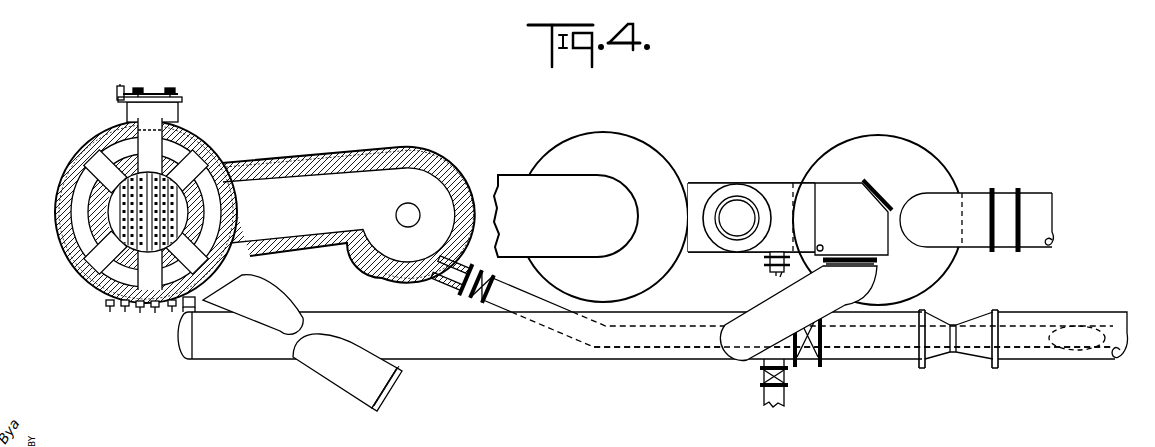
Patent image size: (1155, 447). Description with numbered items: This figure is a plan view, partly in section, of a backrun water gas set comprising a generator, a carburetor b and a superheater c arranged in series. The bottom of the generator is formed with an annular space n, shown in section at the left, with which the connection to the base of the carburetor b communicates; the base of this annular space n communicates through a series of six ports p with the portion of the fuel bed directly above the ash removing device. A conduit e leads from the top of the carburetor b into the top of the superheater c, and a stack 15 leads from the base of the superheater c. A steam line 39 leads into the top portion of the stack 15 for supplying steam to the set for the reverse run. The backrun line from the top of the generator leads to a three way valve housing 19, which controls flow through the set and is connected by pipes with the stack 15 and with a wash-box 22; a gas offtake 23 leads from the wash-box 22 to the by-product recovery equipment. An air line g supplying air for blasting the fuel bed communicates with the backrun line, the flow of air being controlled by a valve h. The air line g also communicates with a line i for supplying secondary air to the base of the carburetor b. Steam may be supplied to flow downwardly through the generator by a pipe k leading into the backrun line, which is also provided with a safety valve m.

The annular space n is at (74, 216).
The ports p is at (212, 241).
The carburetor b is at (432, 183).
The superheater c is at (650, 164).
The conduit e is at (580, 186).
The stack 15 is at (740, 190).
The steam line 39 is at (766, 263).
The wash-box 22 is at (914, 151).
The three way valve housing 19 is at (878, 252).
The gas offtake 23 is at (1038, 196).
The line i is at (520, 292).
The valve h is at (808, 360).
The pipe k is at (758, 396).
The safety valve m is at (397, 393).
The air line g is at (1057, 356).